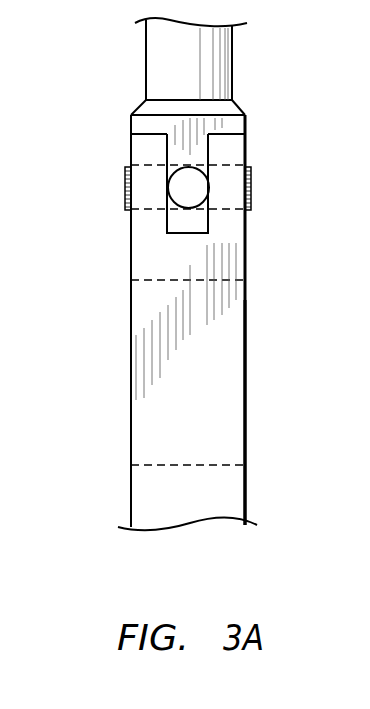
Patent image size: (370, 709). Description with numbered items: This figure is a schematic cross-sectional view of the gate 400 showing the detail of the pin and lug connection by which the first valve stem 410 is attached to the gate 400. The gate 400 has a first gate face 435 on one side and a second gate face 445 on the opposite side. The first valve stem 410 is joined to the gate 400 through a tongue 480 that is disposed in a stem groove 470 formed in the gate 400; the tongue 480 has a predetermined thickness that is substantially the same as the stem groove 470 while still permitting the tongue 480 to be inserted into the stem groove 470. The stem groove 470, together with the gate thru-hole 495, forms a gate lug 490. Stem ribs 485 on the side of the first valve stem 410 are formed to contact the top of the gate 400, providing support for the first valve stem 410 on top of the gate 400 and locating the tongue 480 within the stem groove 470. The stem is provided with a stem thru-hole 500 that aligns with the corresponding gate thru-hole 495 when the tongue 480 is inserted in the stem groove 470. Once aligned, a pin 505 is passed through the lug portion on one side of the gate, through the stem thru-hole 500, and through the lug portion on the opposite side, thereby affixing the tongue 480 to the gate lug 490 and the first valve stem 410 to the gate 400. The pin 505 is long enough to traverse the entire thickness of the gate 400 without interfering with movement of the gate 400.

The gate 400 is at (137, 263).
The first valve stem 410 is at (156, 68).
The first gate face 435 is at (130, 401).
The second gate face 445 is at (247, 393).
The stem groove 470 is at (183, 231).
The tongue 480 is at (198, 153).
The stem ribs 485 is at (233, 108).
The gate lug 490 is at (260, 133).
The gate thru-hole 495 is at (127, 195).
The stem thru-hole 500 is at (178, 180).
The pin 505 is at (127, 185).